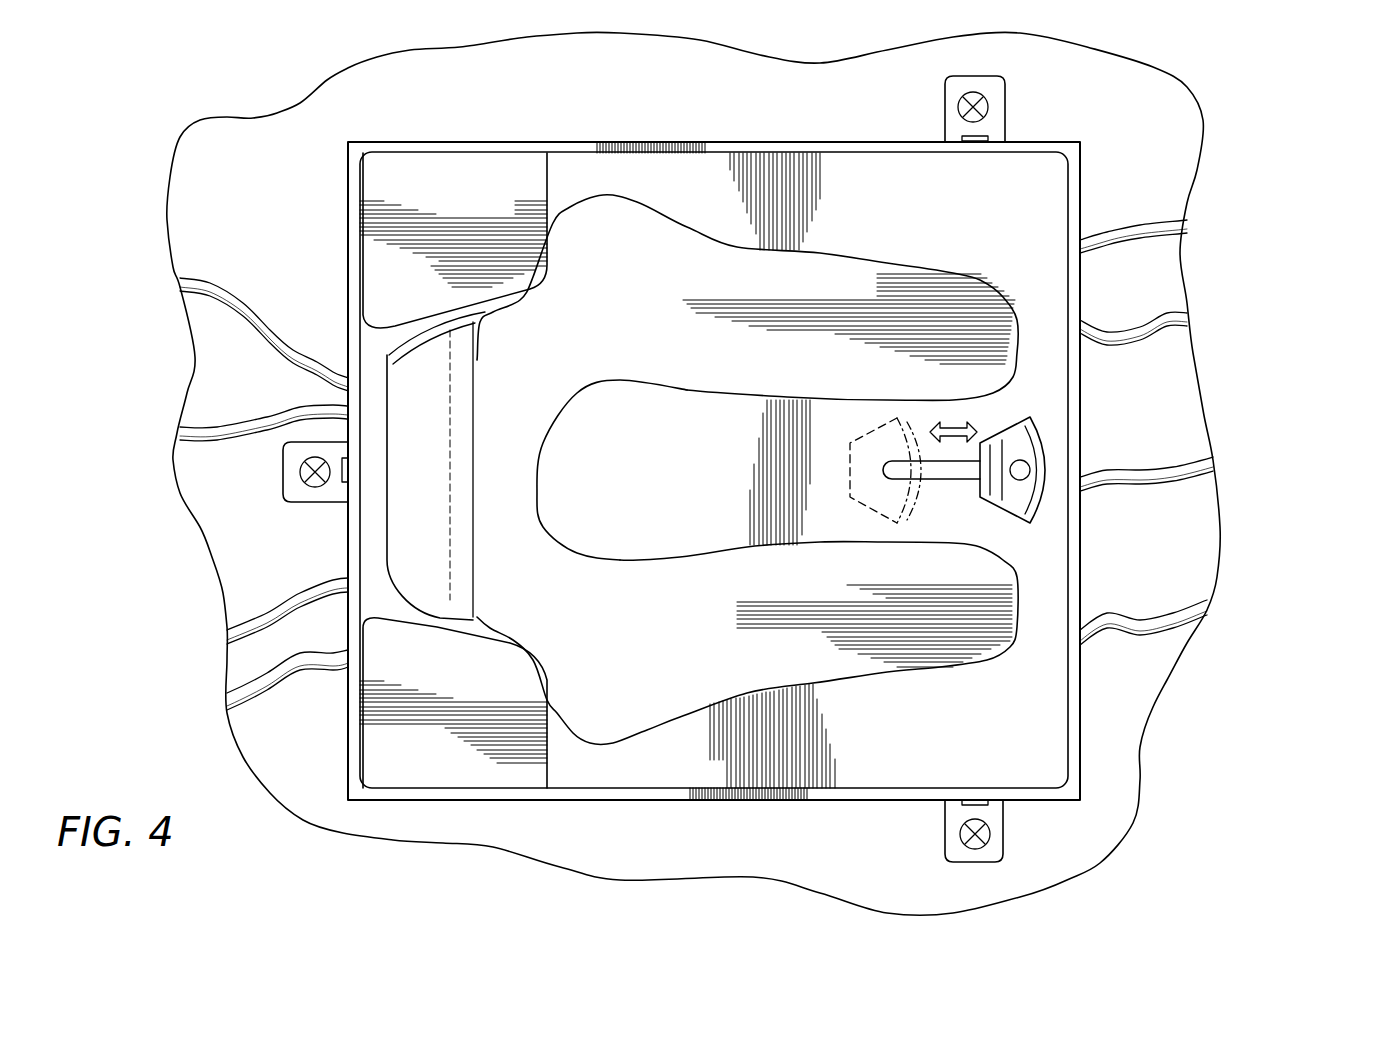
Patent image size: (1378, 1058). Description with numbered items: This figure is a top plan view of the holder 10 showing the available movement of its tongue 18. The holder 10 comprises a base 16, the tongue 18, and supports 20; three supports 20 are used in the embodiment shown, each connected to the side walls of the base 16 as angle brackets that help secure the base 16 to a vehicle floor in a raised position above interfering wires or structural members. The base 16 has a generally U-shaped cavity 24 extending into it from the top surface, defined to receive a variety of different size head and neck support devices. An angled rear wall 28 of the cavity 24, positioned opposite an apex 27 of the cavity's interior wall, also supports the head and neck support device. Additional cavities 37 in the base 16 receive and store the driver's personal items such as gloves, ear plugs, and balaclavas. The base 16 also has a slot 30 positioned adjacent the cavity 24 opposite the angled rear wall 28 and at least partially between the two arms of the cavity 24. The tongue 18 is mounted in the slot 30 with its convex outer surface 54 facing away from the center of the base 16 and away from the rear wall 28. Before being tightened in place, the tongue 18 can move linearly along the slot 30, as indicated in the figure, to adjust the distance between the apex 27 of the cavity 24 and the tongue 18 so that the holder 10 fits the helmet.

The holder 10 is at (1238, 197).
The base 16 is at (1047, 735).
The tongue 18 is at (1020, 500).
The supports 20 is at (1005, 97).
The cavity 24 is at (643, 270).
The apex 27 is at (535, 482).
The rear wall 28 is at (420, 383).
The slot 30 is at (950, 470).
The additional cavities 37 is at (433, 177).
The convex outer surface 54 is at (1043, 437).